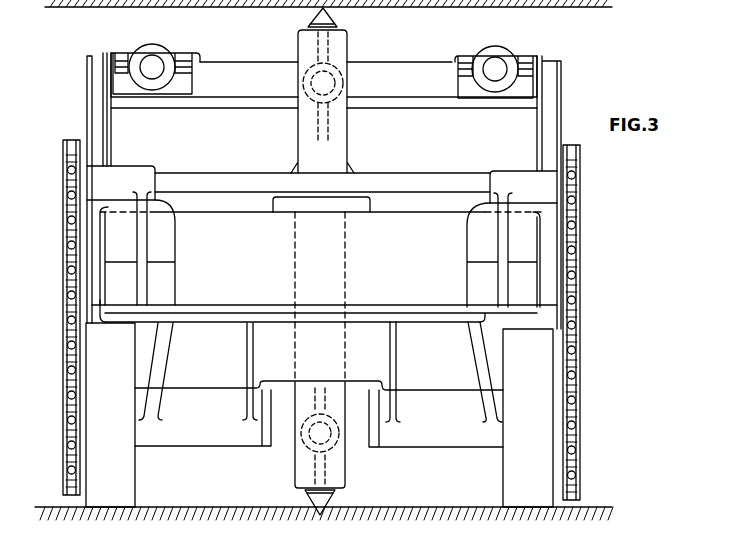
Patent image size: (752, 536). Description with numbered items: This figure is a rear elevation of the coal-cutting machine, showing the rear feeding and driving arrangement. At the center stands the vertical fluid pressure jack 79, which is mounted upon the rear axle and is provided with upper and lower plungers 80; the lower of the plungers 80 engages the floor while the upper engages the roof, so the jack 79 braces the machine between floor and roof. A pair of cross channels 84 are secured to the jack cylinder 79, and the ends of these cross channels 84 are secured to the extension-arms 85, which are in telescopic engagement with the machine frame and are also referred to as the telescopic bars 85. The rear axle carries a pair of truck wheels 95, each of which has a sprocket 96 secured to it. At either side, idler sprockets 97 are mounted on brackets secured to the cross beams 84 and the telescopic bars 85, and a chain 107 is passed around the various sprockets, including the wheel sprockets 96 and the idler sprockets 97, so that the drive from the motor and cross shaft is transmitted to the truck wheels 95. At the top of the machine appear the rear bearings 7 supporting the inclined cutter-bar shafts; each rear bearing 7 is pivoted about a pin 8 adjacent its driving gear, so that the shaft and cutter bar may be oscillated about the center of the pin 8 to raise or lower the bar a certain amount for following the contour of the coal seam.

The rear bearing 7 is at (486, 62).
The pin 8 is at (525, 62).
The vertical fluid pressure jack 79 is at (322, 101).
The plungers 80 is at (362, 499).
The cross channels 84 is at (324, 250).
The extension-arms 85 is at (538, 275).
The truck wheels 95 is at (319, 415).
The sprocket 96 is at (594, 420).
The idler sprocket 97 is at (603, 178).
The chain 107 is at (606, 296).